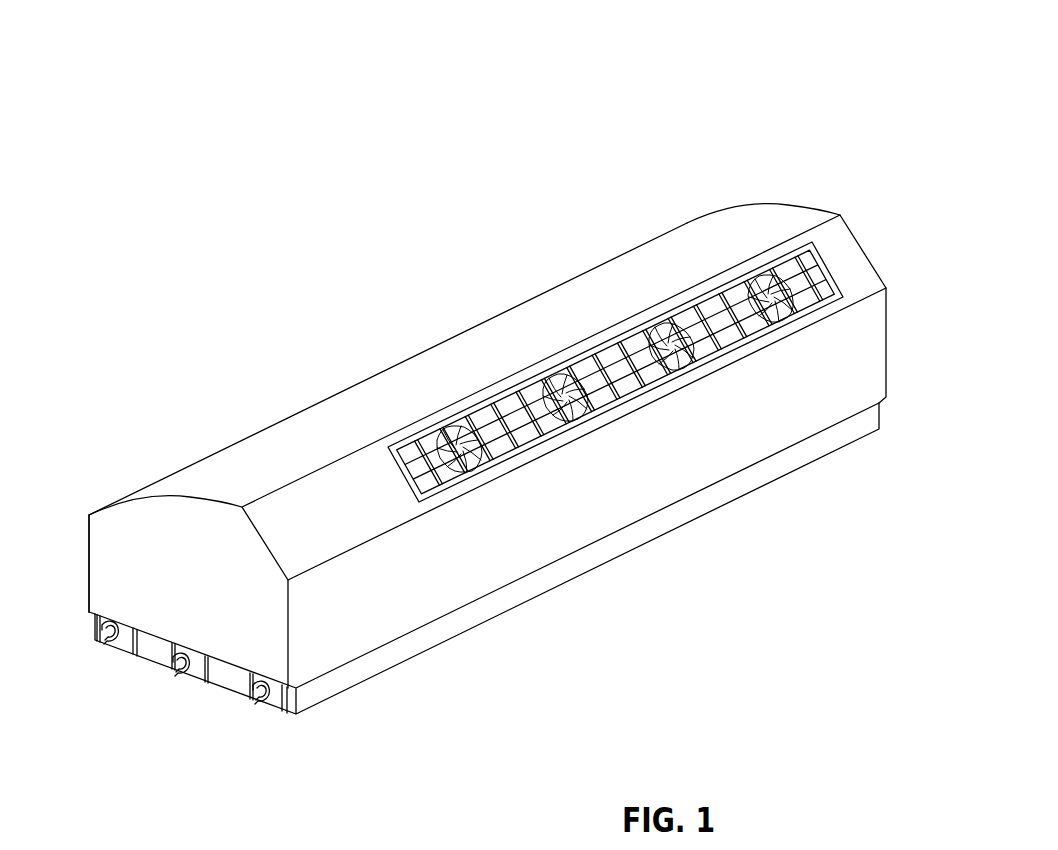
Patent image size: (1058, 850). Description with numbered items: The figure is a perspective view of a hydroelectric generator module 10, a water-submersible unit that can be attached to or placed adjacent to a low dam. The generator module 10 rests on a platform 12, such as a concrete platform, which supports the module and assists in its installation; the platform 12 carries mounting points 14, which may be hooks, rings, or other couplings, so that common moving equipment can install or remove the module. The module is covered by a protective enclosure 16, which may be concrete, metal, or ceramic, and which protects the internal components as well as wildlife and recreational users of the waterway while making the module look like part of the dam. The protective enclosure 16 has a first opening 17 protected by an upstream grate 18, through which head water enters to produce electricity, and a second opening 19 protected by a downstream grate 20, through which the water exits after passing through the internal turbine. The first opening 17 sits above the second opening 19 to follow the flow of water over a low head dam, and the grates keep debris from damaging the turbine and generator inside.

The hydroelectric generator module 10 is at (716, 76).
The platform 12 is at (223, 690).
The mounting points 14 is at (100, 647).
The protective enclosure 16 is at (365, 378).
The first opening 17 is at (575, 355).
The upstream grate 18 is at (744, 276).
The second opening 19 is at (88, 540).
The downstream grate 20 is at (88, 572).